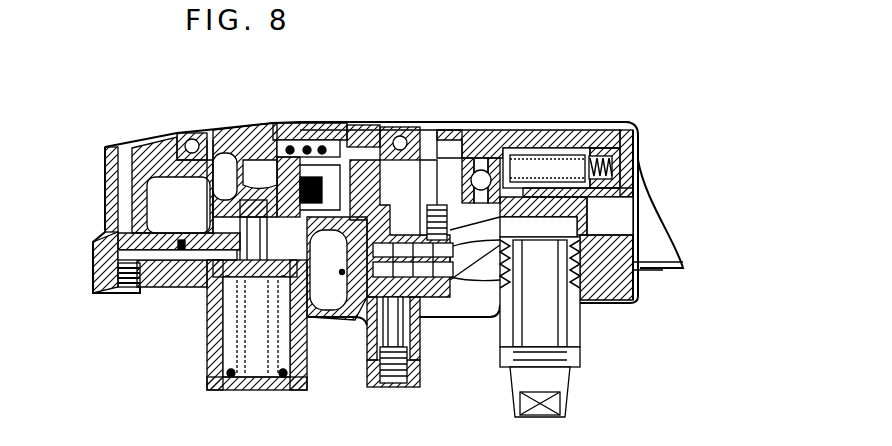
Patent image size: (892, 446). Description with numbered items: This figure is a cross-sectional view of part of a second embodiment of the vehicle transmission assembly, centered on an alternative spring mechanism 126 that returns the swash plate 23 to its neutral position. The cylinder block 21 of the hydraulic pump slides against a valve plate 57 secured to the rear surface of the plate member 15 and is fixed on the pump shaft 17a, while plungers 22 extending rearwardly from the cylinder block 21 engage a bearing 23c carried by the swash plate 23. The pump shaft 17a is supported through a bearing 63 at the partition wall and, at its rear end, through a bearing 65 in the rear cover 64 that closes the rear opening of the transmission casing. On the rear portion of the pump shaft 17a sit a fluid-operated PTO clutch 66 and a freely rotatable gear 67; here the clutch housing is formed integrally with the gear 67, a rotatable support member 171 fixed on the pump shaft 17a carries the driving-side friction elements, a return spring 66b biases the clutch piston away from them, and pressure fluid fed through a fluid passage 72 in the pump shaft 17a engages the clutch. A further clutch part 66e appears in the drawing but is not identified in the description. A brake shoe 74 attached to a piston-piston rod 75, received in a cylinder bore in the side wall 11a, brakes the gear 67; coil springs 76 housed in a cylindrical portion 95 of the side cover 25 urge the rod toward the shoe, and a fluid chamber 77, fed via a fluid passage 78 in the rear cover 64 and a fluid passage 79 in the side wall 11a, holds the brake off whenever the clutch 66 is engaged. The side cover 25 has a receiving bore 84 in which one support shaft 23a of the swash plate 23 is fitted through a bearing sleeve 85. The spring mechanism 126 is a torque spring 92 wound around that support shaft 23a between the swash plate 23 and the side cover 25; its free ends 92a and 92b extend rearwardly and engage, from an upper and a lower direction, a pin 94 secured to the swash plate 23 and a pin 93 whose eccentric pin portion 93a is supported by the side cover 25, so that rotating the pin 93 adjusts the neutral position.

The side wall 11a is at (620, 303).
The plate member 15 is at (662, 253).
The pump shaft 17a is at (470, 128).
The cylinder block 21 is at (570, 190).
The plungers 22 is at (537, 160).
The swash plate 23 is at (443, 177).
The support shaft 23a is at (567, 373).
The bearing 23c is at (483, 157).
The side cover 25 is at (300, 357).
The valve plate 57 is at (640, 195).
The bearing 63 is at (395, 128).
The rear cover 64 is at (100, 273).
The bearing 65 is at (192, 133).
The PTO clutch 66 is at (365, 260).
The return spring 66b is at (300, 140).
The passage 66e is at (340, 272).
The gear 67 is at (237, 210).
The fluid passage 72 is at (272, 125).
The brake shoe 74 is at (237, 220).
The piston-piston rod 75 is at (240, 285).
The coil springs 76 is at (233, 375).
The fluid chamber 77 is at (329, 270).
The fluid passage 78 is at (113, 197).
The fluid passage 79 is at (200, 258).
The receiving bore 84 is at (575, 337).
The bearing sleeve 85 is at (500, 362).
The torque spring 92 is at (560, 273).
The free end portion 92a is at (450, 203).
The free end portion 92b is at (450, 270).
The pin 93 is at (373, 353).
The eccentric pin portion 93a is at (383, 353).
The pin 94 is at (447, 177).
The cylindrical portion 95 is at (210, 355).
The spring mechanism 126 is at (455, 322).
The rotatable support member 171 is at (378, 222).